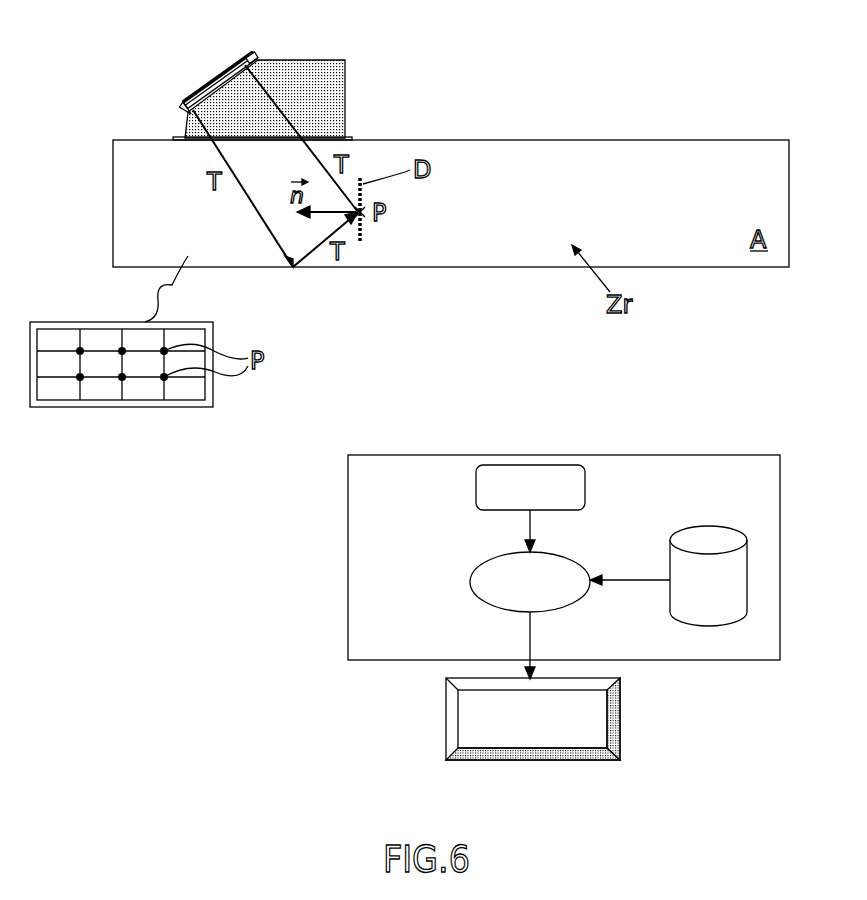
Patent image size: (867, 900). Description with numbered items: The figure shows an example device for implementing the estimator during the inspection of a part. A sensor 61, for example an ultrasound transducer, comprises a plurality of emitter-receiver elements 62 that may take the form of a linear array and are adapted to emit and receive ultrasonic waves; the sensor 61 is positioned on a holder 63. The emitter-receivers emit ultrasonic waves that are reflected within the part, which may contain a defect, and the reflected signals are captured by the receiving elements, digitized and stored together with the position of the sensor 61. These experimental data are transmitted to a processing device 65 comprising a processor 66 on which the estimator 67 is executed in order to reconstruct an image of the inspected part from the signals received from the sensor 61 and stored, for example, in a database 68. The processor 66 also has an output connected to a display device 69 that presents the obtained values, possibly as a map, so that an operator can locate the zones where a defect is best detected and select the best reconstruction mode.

The sensor 61 is at (212, 78).
The emitter-receiver elements 62 is at (253, 63).
The holder 63 is at (333, 78).
The processing device 65 is at (388, 492).
The processor 66 is at (544, 593).
The estimator 67 is at (544, 500).
The database 68 is at (722, 587).
The display device 69 is at (545, 730).